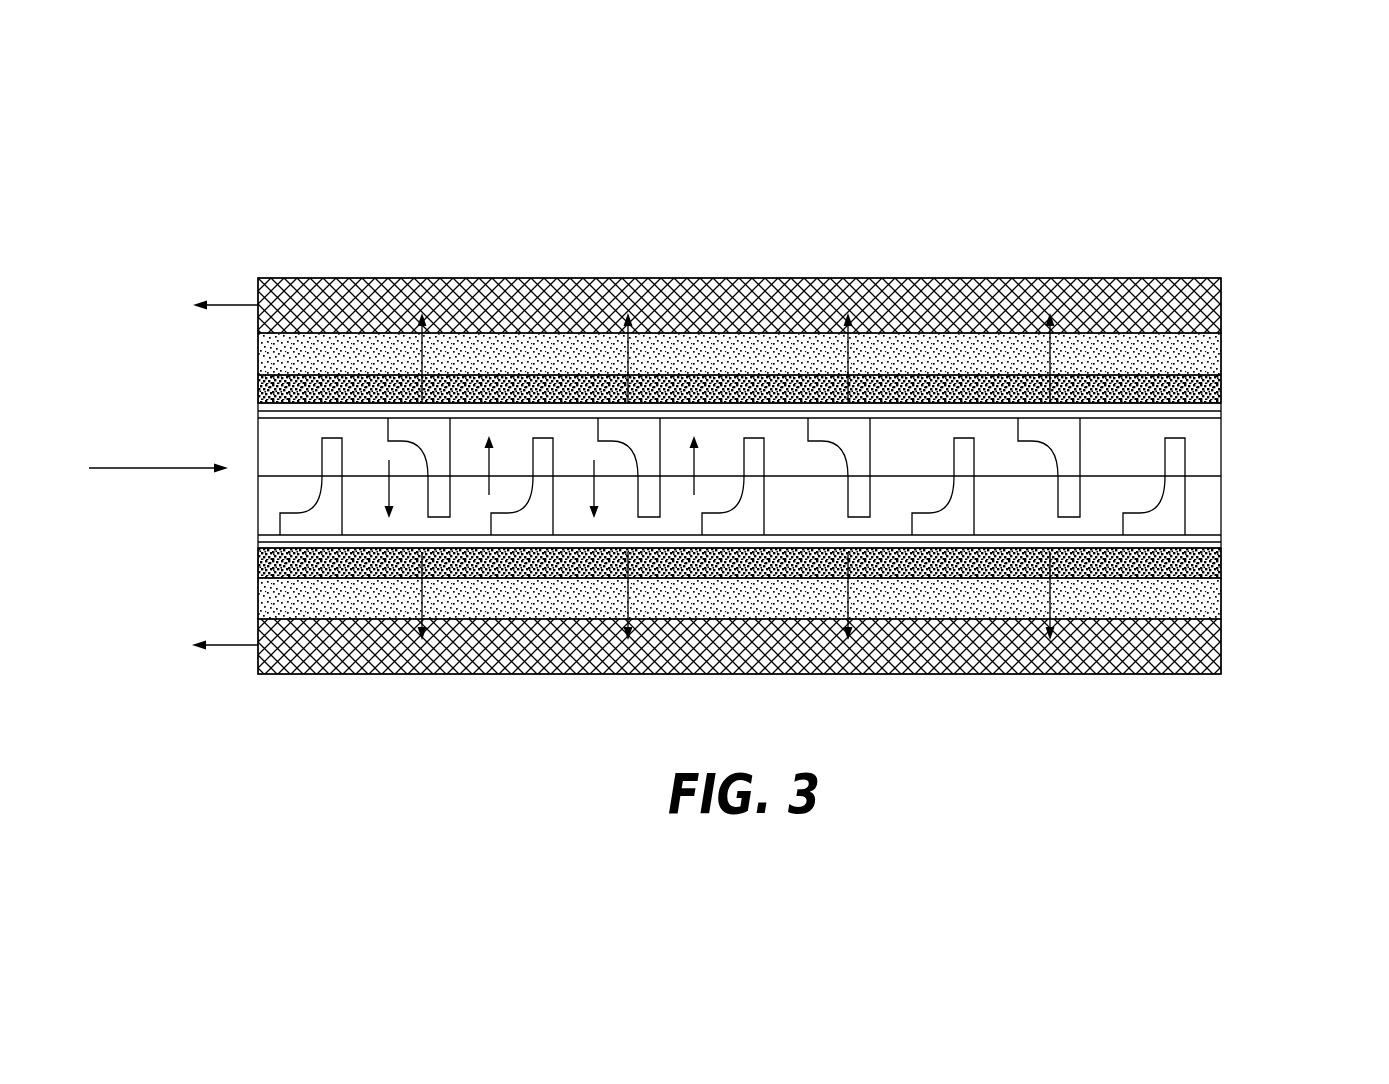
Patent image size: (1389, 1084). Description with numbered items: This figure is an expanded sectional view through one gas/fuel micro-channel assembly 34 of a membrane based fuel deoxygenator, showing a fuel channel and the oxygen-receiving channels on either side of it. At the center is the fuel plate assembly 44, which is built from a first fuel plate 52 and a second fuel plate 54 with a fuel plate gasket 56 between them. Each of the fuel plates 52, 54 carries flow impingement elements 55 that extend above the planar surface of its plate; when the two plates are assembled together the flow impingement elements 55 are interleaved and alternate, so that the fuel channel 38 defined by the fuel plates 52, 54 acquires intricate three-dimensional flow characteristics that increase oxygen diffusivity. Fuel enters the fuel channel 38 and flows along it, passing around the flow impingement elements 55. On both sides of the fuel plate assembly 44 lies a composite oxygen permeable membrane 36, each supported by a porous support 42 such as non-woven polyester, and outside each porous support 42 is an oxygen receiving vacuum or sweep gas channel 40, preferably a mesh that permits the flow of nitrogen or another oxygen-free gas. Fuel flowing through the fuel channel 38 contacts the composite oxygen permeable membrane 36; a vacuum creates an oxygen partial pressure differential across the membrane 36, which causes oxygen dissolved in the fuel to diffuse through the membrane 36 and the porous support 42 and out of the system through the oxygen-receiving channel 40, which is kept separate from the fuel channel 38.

The gas/fuel micro-channel assembly 34 is at (1324, 298).
The composite oxygen permeable membrane 36 is at (1221, 412).
The fuel channel 38 is at (69, 462).
The oxygen receiving vacuum or sweep gas channel 40 is at (1221, 307).
The porous support 42 is at (1221, 355).
The fuel plate assembly 44 is at (1308, 553).
The first fuel plate 52 is at (1210, 450).
The second fuel plate 54 is at (1221, 516).
The flow impingement element 55 is at (976, 513).
The fuel plate gasket 56 is at (1221, 480).